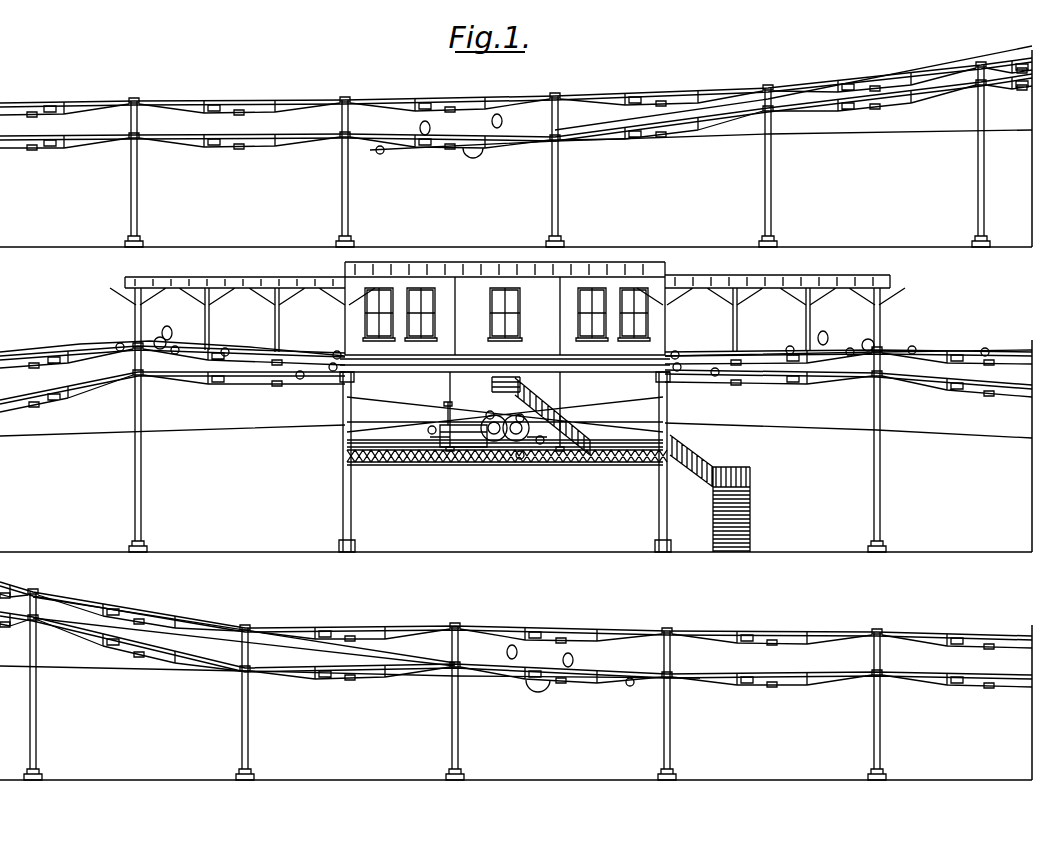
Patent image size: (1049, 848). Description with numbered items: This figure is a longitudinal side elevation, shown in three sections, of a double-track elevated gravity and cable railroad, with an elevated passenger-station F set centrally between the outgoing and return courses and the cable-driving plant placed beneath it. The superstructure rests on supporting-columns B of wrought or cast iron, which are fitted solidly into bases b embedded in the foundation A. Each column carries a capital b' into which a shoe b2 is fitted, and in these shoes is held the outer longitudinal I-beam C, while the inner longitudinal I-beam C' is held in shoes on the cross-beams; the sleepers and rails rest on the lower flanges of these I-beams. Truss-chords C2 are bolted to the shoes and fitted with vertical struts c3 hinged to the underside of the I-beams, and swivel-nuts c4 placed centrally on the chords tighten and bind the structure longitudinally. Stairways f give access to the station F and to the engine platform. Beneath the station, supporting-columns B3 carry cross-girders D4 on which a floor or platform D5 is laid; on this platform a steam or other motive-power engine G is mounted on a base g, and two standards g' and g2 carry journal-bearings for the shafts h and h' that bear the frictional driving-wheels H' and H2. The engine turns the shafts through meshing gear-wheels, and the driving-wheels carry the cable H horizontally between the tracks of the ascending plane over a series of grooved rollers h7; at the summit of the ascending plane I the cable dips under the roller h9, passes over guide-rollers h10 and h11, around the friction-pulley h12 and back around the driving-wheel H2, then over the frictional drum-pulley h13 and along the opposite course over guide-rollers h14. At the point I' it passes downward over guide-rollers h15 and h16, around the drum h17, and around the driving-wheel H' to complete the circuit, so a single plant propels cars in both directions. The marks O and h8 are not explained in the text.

The foundation A is at (516, 425).
The supporting-columns B is at (507, 417).
The supporting-columns B3 is at (507, 462).
The bases b is at (507, 507).
The capitals b' is at (515, 378).
The shoes b2 is at (507, 332).
The outer longitudinal I-beam C is at (516, 381).
The inner longitudinal I-beam C' is at (516, 364).
The truss-chords C2 is at (511, 386).
The vertical struts c3 is at (516, 376).
The swivel-nuts c4 is at (513, 386).
The cable H is at (516, 370).
The elevated passenger-station F is at (505, 310).
The ascending plane I is at (507, 312).
The point on opposite course I' is at (866, 338).
The cross-girders D4 is at (507, 467).
The floor or platform D5 is at (505, 406).
The stairways f is at (628, 464).
The motive-power engine G is at (478, 424).
The frictional driving-wheel H' is at (485, 419).
The frictional driving-wheel H2 is at (516, 419).
The rollers O is at (495, 390).
The grooved rollers h7 is at (146, 338).
The pulley h8 is at (429, 159).
The roller h9 is at (230, 341).
The guide-roller h10 is at (337, 347).
The guide-roller h11 is at (681, 347).
The friction-pulley h12 is at (723, 383).
The frictional drum-pulley h13 is at (587, 693).
The guide-rollers h14 is at (918, 340).
The guide-roller h15 is at (795, 340).
The guide-roller h16 is at (508, 374).
The drum h17 is at (294, 386).
The shaft h is at (505, 467).
The shaft h' is at (539, 432).
The base g is at (432, 435).
The standard g' is at (507, 406).
The standard g2 is at (527, 469).